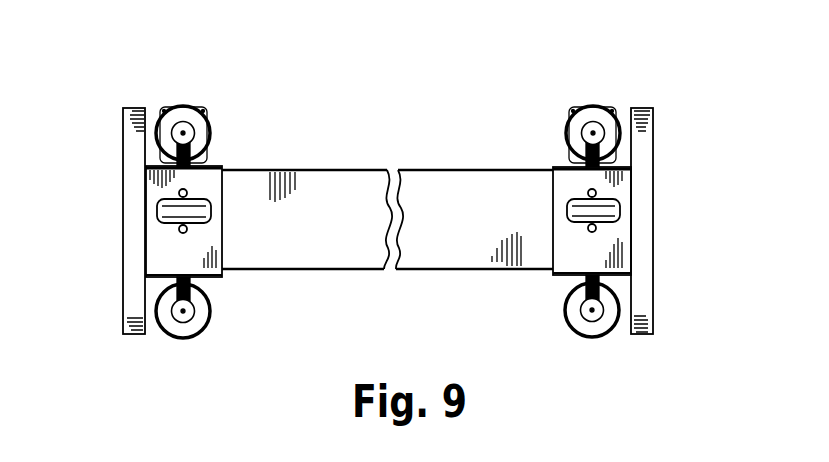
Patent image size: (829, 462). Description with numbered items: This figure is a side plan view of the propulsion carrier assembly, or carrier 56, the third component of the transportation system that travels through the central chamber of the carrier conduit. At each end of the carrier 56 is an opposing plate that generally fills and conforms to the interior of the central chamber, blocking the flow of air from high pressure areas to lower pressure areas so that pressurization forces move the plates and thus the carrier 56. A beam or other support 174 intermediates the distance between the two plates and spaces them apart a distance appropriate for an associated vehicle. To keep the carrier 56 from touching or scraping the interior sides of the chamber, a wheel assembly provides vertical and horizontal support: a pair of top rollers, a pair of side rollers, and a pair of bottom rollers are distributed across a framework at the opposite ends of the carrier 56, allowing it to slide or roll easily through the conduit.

The carrier 56 is at (393, 108).
The beam or support 174 is at (476, 230).